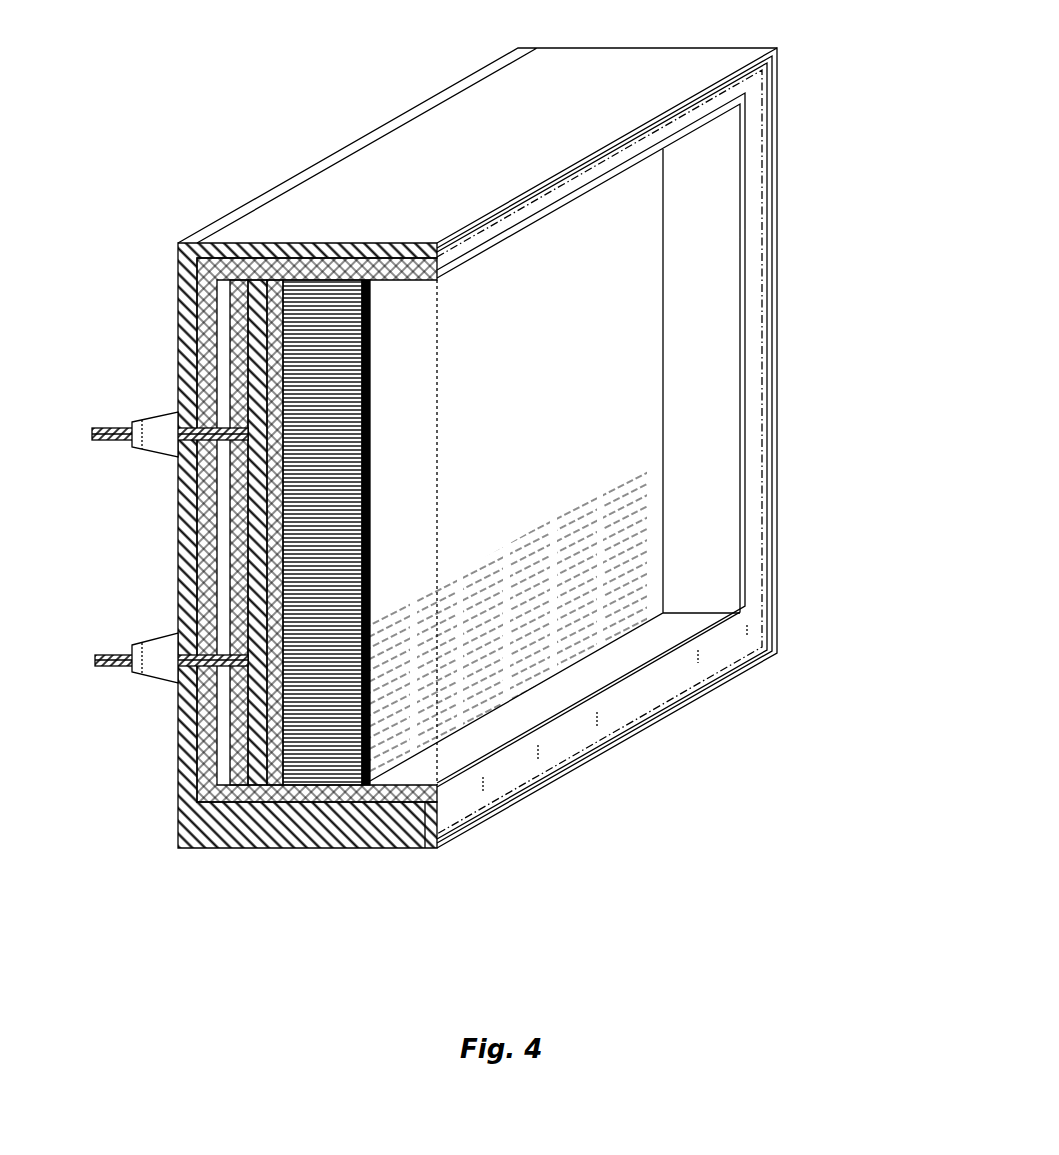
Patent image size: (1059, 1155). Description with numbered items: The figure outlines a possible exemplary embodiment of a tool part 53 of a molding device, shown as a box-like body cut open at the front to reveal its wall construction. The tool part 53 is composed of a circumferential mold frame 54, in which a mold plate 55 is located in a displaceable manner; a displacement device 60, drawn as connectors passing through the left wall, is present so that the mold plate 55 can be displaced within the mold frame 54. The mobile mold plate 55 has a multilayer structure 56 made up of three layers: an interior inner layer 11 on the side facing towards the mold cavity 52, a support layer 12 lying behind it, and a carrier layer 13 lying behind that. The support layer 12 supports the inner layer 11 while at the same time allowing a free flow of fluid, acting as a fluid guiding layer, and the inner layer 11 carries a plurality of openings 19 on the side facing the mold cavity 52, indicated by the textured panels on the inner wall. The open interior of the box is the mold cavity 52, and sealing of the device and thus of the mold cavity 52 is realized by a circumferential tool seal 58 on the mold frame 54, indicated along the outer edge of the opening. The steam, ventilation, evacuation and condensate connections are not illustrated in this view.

The tool part 53 is at (144, 48).
The mold frame 54 is at (138, 824).
The displacement device 60 is at (138, 401).
The mold cavity 52 is at (603, 395).
The carrier layer 13 is at (280, 785).
The support layer 12 is at (316, 785).
The multilayer structure 56 is at (287, 630).
The mold plate 55 is at (287, 668).
The tool seal 58 is at (477, 824).
The inner layer 11 is at (507, 498).
The openings 19 is at (530, 650).